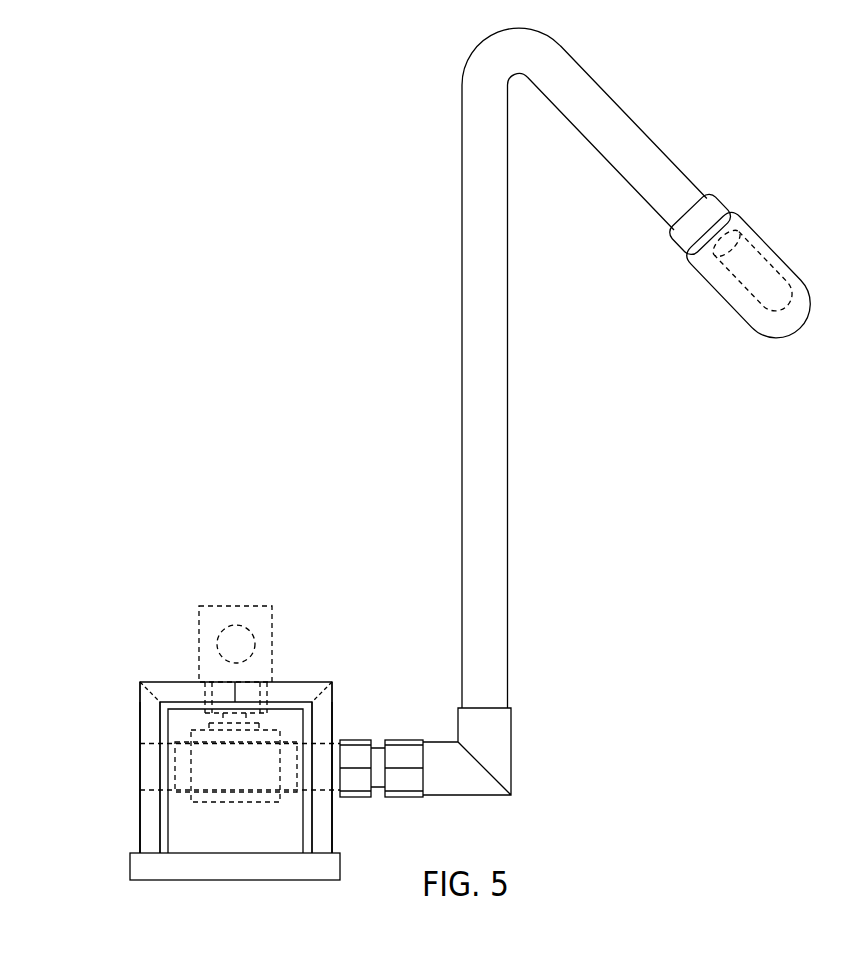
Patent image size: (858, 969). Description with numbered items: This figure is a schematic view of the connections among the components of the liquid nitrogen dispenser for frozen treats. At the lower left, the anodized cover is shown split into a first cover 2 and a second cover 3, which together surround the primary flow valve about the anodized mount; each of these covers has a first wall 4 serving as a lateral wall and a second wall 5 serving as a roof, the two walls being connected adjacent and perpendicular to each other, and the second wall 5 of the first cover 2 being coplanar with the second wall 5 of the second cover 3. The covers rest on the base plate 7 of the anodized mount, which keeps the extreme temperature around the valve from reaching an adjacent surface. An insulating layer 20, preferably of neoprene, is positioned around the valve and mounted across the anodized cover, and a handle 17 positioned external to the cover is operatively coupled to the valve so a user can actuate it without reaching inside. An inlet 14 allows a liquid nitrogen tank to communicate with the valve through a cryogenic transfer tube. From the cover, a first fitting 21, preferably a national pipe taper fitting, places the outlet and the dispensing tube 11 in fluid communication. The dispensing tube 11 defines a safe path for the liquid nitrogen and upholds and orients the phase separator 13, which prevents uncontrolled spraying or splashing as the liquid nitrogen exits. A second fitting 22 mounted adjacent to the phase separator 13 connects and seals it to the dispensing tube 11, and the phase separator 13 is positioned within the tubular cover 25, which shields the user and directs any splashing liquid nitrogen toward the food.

The first cover 2 is at (124, 662).
The second cover 3 is at (365, 652).
The first wall 4 is at (150, 716).
The second wall 5 is at (167, 693).
The base plate 7 is at (132, 862).
The dispensing tube 11 is at (471, 410).
The phase separator 13 is at (783, 300).
The inlet 14 is at (146, 775).
The handle 17 is at (230, 613).
The insulating layer 20 is at (165, 830).
The first fitting 21 is at (478, 787).
The second fitting 22 is at (695, 258).
The tubular cover 25 is at (770, 253).